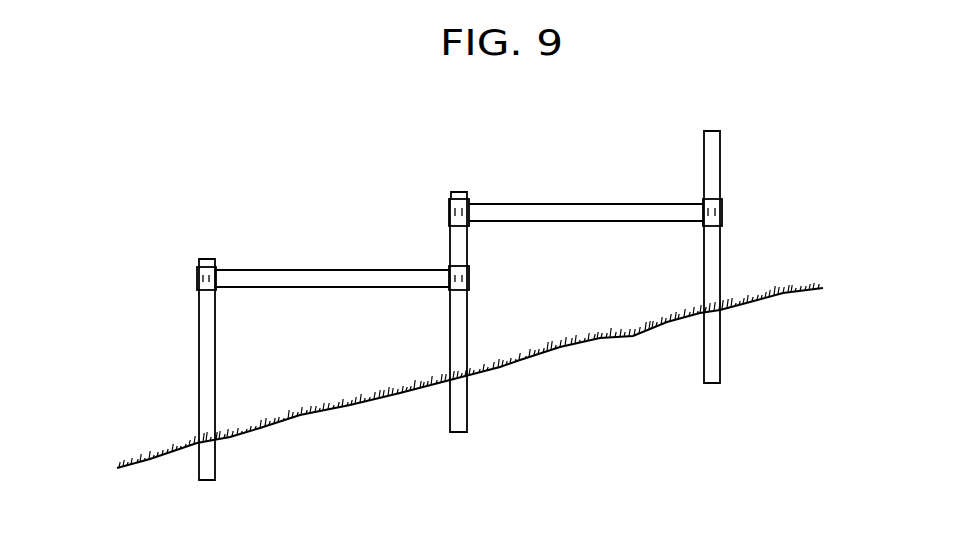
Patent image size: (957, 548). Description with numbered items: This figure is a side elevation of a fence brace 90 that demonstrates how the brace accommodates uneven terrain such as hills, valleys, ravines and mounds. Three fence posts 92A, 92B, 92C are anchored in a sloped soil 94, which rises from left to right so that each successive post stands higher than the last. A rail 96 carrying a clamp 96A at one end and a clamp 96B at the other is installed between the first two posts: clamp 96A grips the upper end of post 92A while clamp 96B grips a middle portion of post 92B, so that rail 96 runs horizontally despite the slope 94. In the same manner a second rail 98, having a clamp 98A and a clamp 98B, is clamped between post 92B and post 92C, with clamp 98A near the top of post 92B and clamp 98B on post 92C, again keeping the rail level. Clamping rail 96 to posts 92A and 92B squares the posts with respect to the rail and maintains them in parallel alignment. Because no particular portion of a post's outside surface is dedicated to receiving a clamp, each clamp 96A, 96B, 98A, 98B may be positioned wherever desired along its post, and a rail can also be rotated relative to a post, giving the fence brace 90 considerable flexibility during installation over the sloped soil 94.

The fence brace 90 is at (232, 150).
The fence post 92A is at (197, 370).
The fence post 92B is at (450, 318).
The fence post 92C is at (720, 260).
The sloped soil 94 is at (118, 470).
The rail 96 is at (323, 270).
The clamp 96A is at (197, 278).
The clamp 96B is at (469, 278).
The rail 98 is at (553, 204).
The clamp 98A is at (449, 210).
The clamp 98B is at (722, 210).